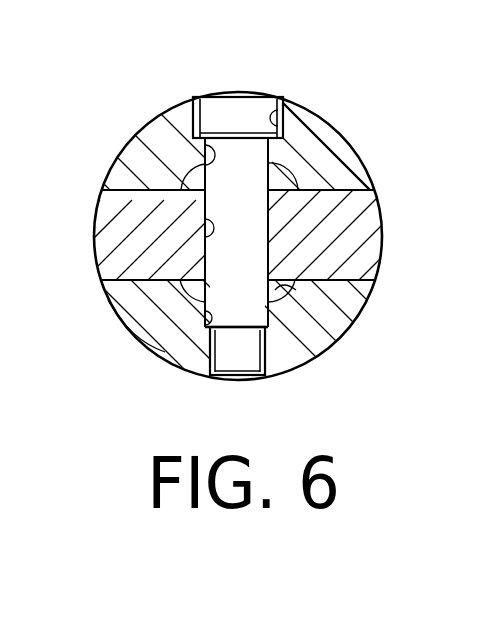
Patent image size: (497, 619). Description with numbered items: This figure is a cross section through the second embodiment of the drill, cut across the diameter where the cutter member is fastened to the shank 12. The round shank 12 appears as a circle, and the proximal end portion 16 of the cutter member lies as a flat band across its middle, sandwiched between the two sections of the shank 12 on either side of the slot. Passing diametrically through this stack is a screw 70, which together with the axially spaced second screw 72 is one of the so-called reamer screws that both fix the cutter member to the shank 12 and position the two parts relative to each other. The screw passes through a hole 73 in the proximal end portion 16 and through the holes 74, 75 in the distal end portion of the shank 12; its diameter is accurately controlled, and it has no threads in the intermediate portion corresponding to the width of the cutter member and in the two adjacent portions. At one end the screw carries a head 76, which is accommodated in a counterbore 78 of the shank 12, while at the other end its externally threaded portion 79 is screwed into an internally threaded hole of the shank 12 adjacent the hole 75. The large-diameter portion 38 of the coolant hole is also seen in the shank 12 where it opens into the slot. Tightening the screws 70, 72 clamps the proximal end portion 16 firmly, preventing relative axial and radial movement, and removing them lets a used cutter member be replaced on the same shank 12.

The shank 12 is at (341, 158).
The proximal end portion 16 is at (362, 236).
The large-diameter portion 38 is at (278, 288).
The screw 70 is at (268, 88).
The screw 72 is at (306, 167).
The hole 73 is at (205, 228).
The hole 74 is at (183, 190).
The hole 75 is at (200, 340).
The head 76 is at (216, 97).
The counterbore 78 is at (284, 103).
The externally threaded portion 79 is at (248, 360).